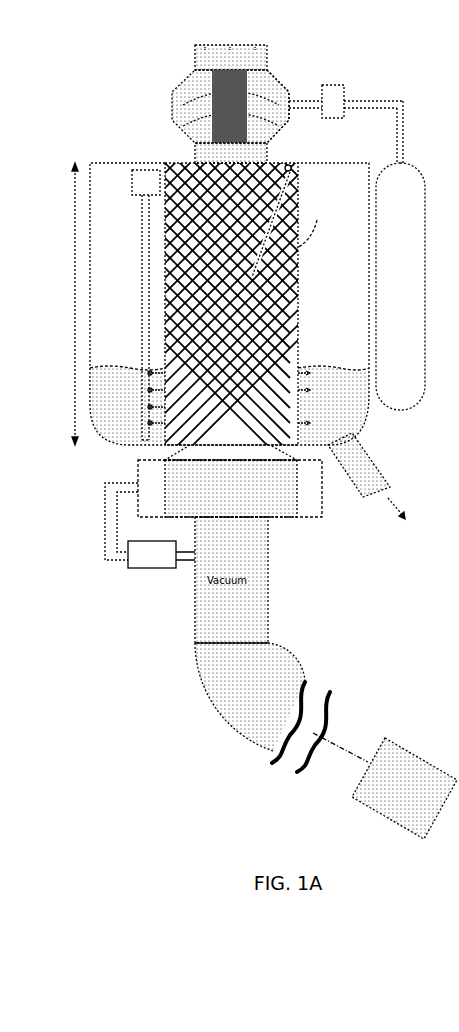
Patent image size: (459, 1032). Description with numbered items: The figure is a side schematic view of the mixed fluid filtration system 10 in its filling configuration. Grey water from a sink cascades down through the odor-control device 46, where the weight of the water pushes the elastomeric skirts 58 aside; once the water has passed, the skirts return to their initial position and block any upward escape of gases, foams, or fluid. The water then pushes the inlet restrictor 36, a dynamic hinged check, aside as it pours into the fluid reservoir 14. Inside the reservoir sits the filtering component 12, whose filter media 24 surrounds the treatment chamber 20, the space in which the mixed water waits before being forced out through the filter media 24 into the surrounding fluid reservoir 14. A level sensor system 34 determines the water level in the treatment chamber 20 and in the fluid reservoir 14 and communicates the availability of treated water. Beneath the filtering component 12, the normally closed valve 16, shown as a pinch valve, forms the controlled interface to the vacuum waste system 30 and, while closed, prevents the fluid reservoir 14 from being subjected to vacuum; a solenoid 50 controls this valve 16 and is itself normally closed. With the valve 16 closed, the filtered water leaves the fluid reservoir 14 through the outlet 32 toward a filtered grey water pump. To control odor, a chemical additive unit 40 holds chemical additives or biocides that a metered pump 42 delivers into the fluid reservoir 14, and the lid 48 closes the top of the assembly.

The mixed fluid filtration system 10 is at (388, 56).
The filtering component 12 is at (260, 352).
The fluid reservoir 14 is at (122, 258).
The valve 16 is at (165, 500).
The treatment chamber 20 is at (278, 278).
The filter media 24 is at (163, 313).
The vacuum waste system 30 is at (277, 166).
The outlet 32 is at (370, 487).
The level sensor system 34 is at (147, 178).
The inlet restrictor 36 is at (233, 162).
The chemical additive unit 40 is at (400, 286).
The metered pump 42 is at (346, 92).
The odor-control device 46 is at (193, 70).
The lid 48 is at (265, 55).
The solenoid 50 is at (147, 557).
The elastomeric skirt structure 58 is at (273, 75).